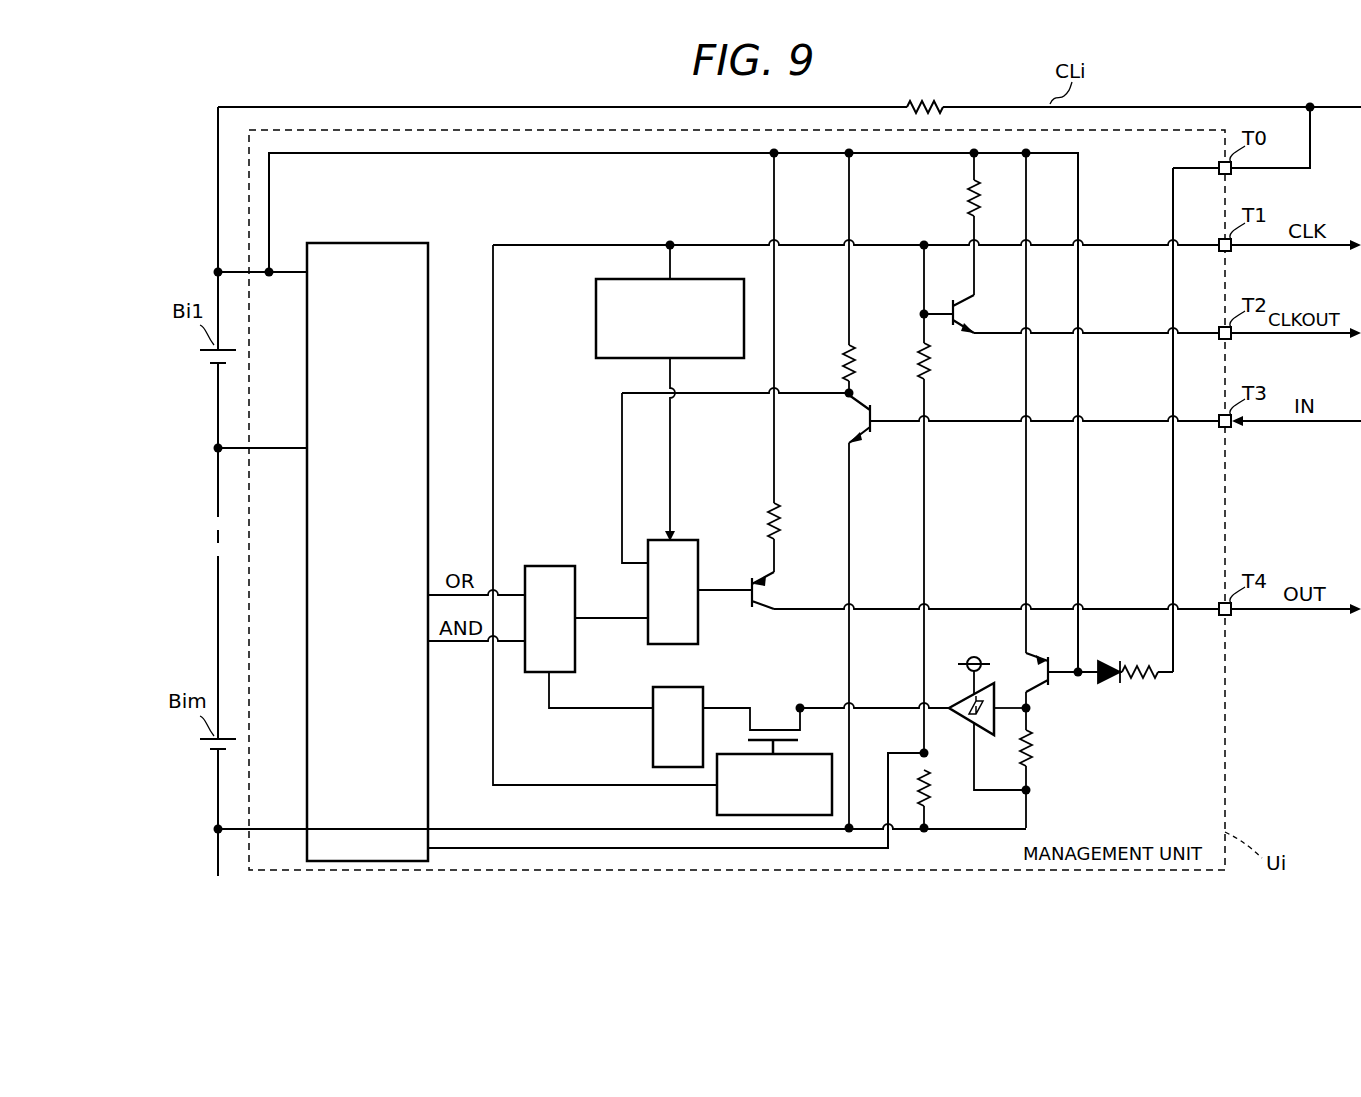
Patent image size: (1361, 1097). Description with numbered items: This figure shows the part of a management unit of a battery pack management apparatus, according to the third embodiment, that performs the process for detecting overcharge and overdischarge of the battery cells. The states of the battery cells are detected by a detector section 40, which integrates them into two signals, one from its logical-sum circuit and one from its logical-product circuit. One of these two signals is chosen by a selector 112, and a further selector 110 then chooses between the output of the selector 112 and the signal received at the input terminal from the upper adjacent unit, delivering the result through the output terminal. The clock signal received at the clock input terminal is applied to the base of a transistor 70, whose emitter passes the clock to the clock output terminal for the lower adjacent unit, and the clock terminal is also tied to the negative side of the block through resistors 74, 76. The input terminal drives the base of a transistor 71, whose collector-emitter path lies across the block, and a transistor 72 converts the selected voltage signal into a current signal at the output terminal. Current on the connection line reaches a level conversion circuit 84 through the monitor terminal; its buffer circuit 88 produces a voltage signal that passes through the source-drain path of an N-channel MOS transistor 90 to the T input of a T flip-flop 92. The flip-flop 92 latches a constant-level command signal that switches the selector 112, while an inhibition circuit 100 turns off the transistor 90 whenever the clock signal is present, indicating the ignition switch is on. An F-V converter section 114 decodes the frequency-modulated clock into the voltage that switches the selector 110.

The detector section 40 is at (410, 243).
The transistor 70 is at (953, 303).
The transistor 71 is at (862, 443).
The transistor 72 is at (766, 612).
The resistor 74 is at (932, 790).
The resistor 76 is at (930, 362).
The level conversion circuit 84 is at (1056, 698).
The buffer circuit 88 is at (960, 716).
The N-channel MOS transistor 90 is at (750, 717).
The T flip-flop 92 is at (690, 687).
The inhibition circuit 100 is at (717, 800).
The selector 110 is at (700, 540).
The selector 112 is at (556, 566).
The F-V converter section 114 is at (596, 290).